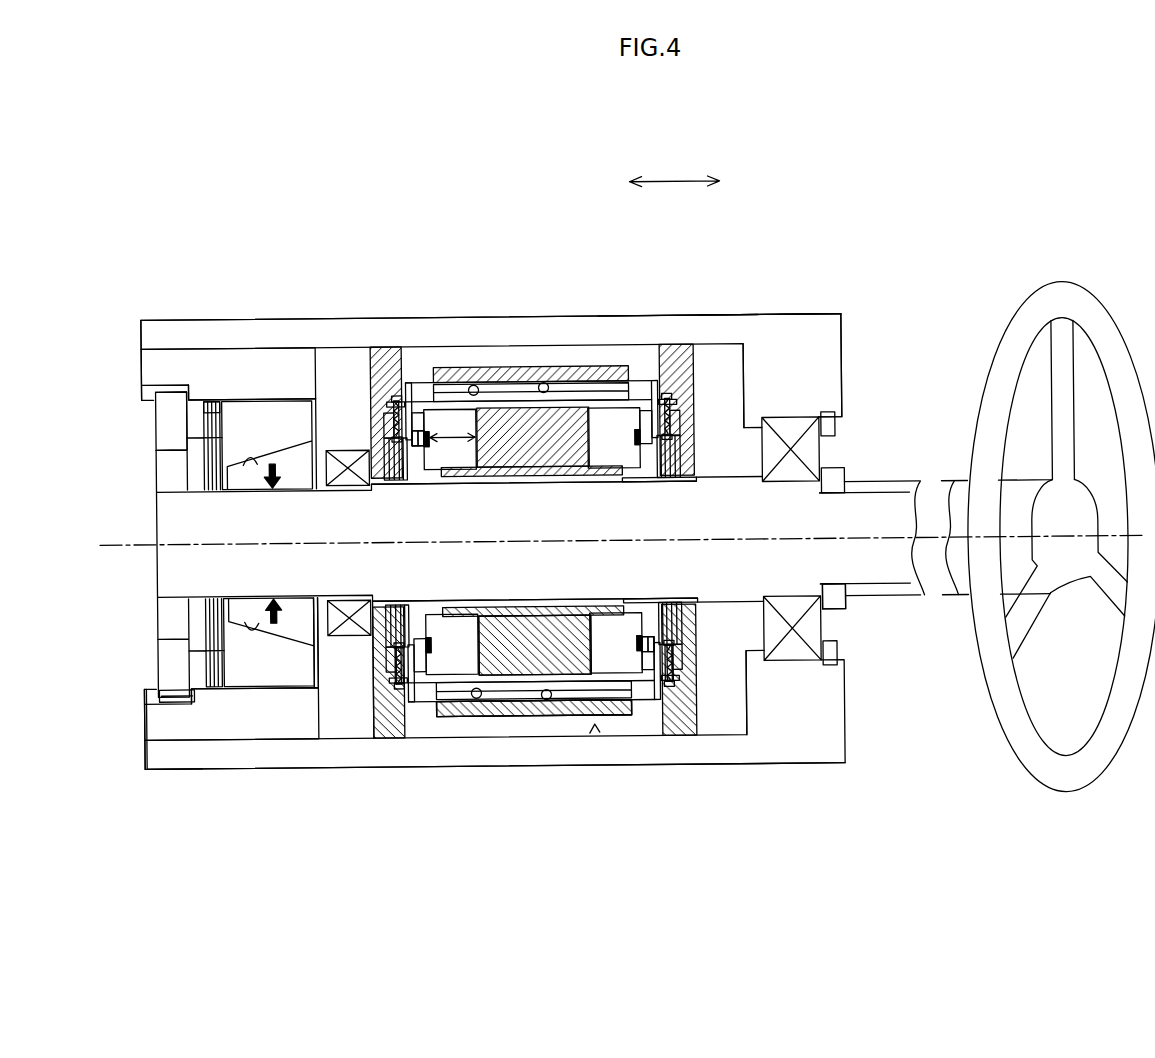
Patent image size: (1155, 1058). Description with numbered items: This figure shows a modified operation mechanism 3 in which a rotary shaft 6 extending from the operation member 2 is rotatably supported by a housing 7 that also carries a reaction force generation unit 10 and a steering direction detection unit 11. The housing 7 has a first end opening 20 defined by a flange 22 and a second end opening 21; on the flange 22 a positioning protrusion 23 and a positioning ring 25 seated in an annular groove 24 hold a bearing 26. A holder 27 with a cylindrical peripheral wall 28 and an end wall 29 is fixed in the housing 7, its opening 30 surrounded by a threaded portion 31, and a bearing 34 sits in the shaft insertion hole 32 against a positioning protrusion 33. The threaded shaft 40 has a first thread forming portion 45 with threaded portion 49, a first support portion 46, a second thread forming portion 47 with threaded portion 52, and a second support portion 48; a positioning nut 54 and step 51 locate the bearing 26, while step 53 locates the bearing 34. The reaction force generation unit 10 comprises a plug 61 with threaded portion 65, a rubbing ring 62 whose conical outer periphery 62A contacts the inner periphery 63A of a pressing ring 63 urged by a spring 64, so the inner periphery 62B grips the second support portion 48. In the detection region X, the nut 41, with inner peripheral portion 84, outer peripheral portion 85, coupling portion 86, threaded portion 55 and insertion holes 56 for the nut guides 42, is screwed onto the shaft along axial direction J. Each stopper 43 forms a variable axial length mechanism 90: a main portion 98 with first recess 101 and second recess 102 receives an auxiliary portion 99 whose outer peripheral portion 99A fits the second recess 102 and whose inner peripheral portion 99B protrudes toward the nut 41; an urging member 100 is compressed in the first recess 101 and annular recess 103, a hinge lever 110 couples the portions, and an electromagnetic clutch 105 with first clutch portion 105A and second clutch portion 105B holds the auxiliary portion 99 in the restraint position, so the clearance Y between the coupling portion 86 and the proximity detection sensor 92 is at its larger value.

The operation member 2 is at (1068, 778).
The operation mechanism 3 is at (881, 279).
The rotary shaft 6 is at (960, 580).
The housing 7 is at (690, 740).
The reaction force generation unit 10 is at (261, 357).
The steering direction detection unit 11 is at (573, 733).
The first end opening 20 is at (790, 660).
The second end opening 21 is at (150, 735).
The flange 22 is at (830, 350).
The positioning protrusion 23 is at (735, 345).
The annular groove 24 is at (828, 422).
The positioning ring 25 is at (832, 482).
The bearing 26 is at (800, 335).
The holder 27 is at (215, 345).
The cylindrical peripheral wall 28 is at (238, 362).
The end wall 29 is at (333, 405).
The opening 30 is at (160, 432).
The threaded portion 31 is at (172, 700).
The shaft insertion hole 32 is at (350, 635).
The positioning protrusion 33 is at (318, 615).
The bearing 34 is at (374, 640).
The threaded shaft 40 is at (740, 585).
The nut 41 is at (547, 720).
The nut guides 42 is at (612, 392).
The stoppers 43 is at (392, 415).
The first thread forming portion 45 is at (890, 575).
The first support portion 46 is at (818, 600).
The second thread forming portion 47 is at (520, 660).
The second support portion 48 is at (160, 560).
The threaded portion 49 is at (885, 590).
The step 51 is at (770, 486).
The threaded portion 52 is at (655, 598).
The step 53 is at (385, 470).
The positioning nut 54 is at (835, 495).
The threaded portion 55 is at (565, 485).
The insertion holes 56 is at (560, 375).
The plug 61 is at (165, 457).
The rubbing ring 62 is at (300, 470).
The outer periphery of rubbing ring 62A is at (240, 470).
The inner periphery of rubbing ring 62B is at (275, 490).
The pressing ring 63 is at (262, 425).
The inner periphery of pressing ring 63A is at (282, 440).
The spring 64 is at (178, 333).
The threaded portion 65 is at (182, 697).
The inner peripheral portion 84 is at (470, 478).
The outer peripheral portion 85 is at (600, 395).
The coupling portion 86 is at (535, 455).
The variable axial length mechanism 90 is at (398, 685).
The proximity detection sensor 92 is at (546, 383).
The main portion 98 is at (385, 404).
The auxiliary portion 99 is at (418, 420).
The outer peripheral portion 99A is at (410, 430).
The inner peripheral portion 99B is at (440, 400).
The urging member 100 is at (395, 470).
The first recess 101 is at (405, 395).
The second recess 102 is at (430, 430).
The annular recess 103 is at (440, 470).
The electromagnetic clutch 105 is at (380, 202).
The first clutch portion 105A is at (415, 430).
The second clutch portion 105B is at (425, 430).
The hinge lever 110 is at (668, 398).
The axial direction J is at (677, 181).
The detection region X is at (593, 737).
The clearance Y is at (452, 450).